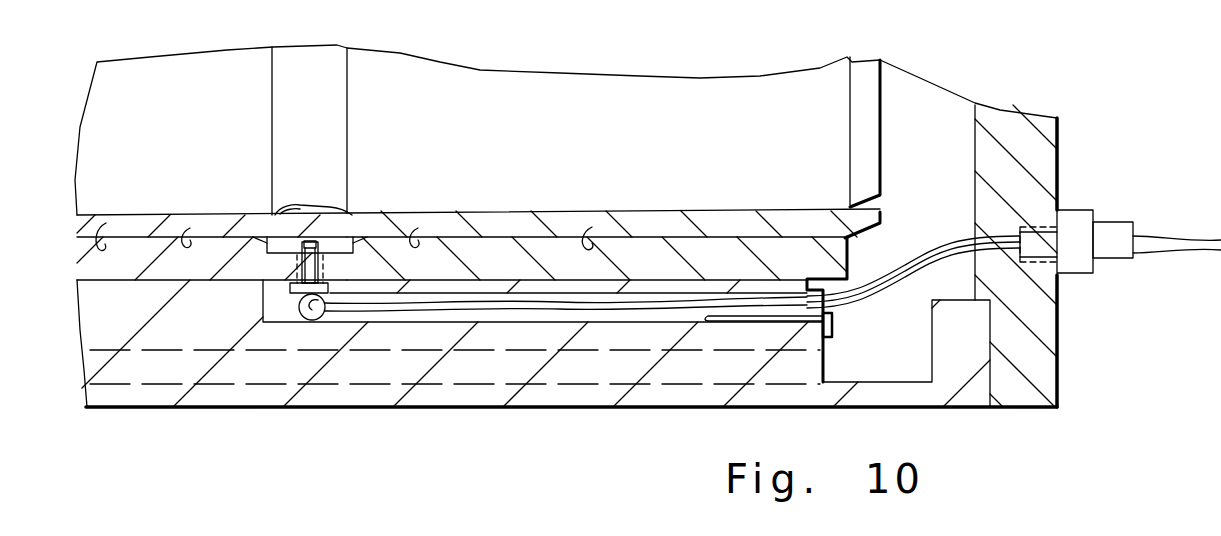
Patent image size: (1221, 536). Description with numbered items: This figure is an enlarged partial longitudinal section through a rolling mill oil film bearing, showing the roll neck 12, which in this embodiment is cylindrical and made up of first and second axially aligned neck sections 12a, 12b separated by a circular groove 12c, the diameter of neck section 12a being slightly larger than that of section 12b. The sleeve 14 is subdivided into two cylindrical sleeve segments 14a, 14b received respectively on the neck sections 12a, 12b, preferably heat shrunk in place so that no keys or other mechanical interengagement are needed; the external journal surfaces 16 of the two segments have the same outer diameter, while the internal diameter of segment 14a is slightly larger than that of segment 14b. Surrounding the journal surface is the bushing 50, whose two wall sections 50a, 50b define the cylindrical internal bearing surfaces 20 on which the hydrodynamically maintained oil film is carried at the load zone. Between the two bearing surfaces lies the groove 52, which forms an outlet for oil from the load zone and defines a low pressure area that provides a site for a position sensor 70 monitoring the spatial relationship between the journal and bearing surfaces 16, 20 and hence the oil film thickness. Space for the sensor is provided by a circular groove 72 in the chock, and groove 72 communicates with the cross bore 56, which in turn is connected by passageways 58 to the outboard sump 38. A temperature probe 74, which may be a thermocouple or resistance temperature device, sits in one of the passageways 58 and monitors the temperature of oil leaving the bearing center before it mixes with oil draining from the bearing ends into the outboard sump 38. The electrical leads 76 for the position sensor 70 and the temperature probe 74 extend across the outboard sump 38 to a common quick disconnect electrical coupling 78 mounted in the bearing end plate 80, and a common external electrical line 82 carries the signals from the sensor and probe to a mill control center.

The roll neck 12 is at (577, 61).
The first neck section 12a is at (150, 106).
The second neck section 12b is at (622, 137).
The circular groove 12c is at (328, 97).
The sleeve 14 is at (904, 196).
The first sleeve segment 14a is at (116, 222).
The second sleeve segment 14b is at (478, 222).
The journal surface 16 is at (198, 222).
The internal bearing surface 20 is at (357, 244).
The outboard sump 38 is at (905, 363).
The bushing 50 is at (862, 264).
The first bushing wall section 50a is at (185, 267).
The second bushing wall section 50b is at (718, 245).
The groove 52 is at (338, 242).
The cross bore 56 is at (312, 320).
The passageways 58 is at (642, 315).
The position sensor 70 is at (372, 262).
The circular groove 72 is at (283, 303).
The temperature probe 74 is at (773, 320).
The electrical leads 76 is at (888, 290).
The quick disconnect electrical coupling 78 is at (1068, 222).
The bearing end plate 80 is at (1037, 350).
The external electrical line 82 is at (1175, 243).